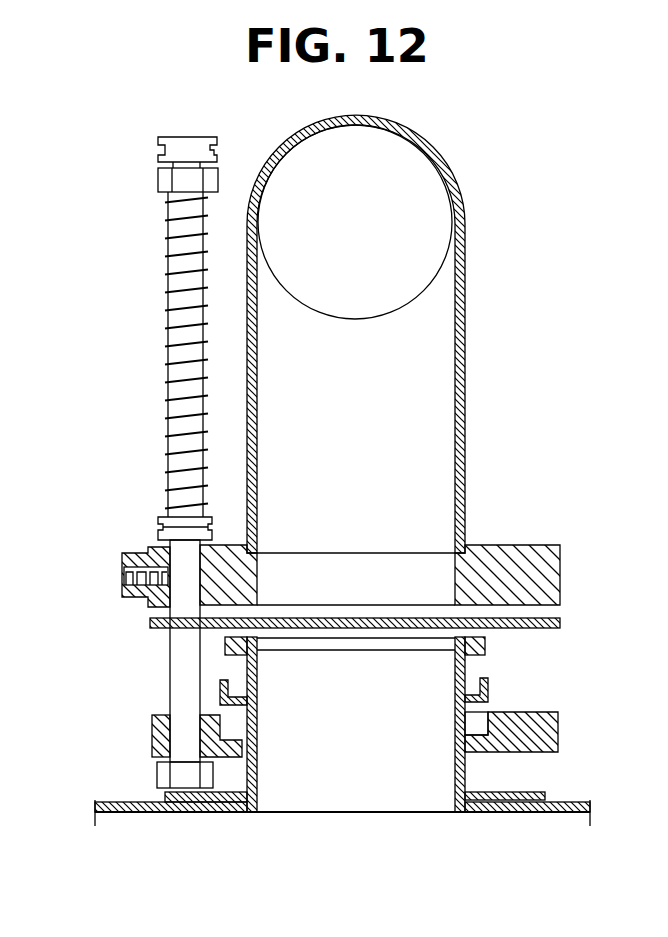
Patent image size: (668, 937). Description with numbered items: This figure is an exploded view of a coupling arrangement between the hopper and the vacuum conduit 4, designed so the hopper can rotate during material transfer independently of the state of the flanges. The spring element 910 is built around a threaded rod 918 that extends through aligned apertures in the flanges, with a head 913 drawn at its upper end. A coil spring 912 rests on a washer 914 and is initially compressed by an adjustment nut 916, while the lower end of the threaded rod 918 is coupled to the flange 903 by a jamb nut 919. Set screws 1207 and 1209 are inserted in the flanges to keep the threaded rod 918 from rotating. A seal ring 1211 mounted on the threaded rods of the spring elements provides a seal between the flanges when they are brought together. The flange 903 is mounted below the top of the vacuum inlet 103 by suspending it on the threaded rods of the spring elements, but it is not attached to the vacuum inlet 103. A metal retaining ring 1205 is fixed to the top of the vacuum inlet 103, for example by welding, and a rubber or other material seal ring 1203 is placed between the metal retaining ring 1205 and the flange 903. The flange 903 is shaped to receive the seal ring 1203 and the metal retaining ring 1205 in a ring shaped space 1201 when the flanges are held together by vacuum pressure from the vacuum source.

The vacuum conduit 4 is at (318, 158).
The vacuum inlet 103 is at (432, 774).
The flange 903 is at (558, 730).
The spring element 910 is at (140, 251).
The coil spring 912 is at (168, 332).
The screw head 913 is at (172, 137).
The washer 914 is at (158, 520).
The adjustment nut 916 is at (158, 182).
The threaded rod 918 is at (178, 395).
The jamb nut 919 is at (157, 773).
The ring shaped space 1201 is at (470, 722).
The seal ring 1203 is at (488, 690).
The metal retaining ring 1205 is at (485, 648).
The set screw 1207 is at (152, 738).
The set screw 1209 is at (122, 578).
The seal ring 1211 is at (150, 624).